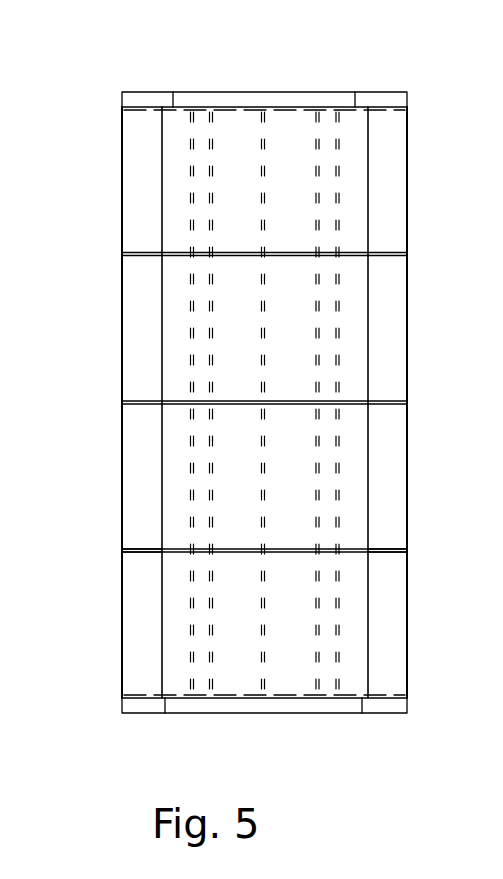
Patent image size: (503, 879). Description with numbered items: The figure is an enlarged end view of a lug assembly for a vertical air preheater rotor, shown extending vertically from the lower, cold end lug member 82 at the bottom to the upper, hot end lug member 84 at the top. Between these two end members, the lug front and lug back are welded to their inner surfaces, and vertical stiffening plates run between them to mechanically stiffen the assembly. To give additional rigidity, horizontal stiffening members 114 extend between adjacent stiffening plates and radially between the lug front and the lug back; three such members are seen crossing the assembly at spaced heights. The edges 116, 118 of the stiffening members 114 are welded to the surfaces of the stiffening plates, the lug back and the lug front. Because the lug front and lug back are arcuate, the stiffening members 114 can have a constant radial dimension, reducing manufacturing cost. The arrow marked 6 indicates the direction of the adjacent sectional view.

The section view arrow (FIG. 6) 6 is at (447, 145).
The cold end lug member 82 is at (409, 705).
The hot end lug member 84 is at (125, 103).
The stiffening member 114 is at (400, 253).
The edge of stiffening member 116 is at (122, 551).
The edge of stiffening member 118 is at (408, 550).